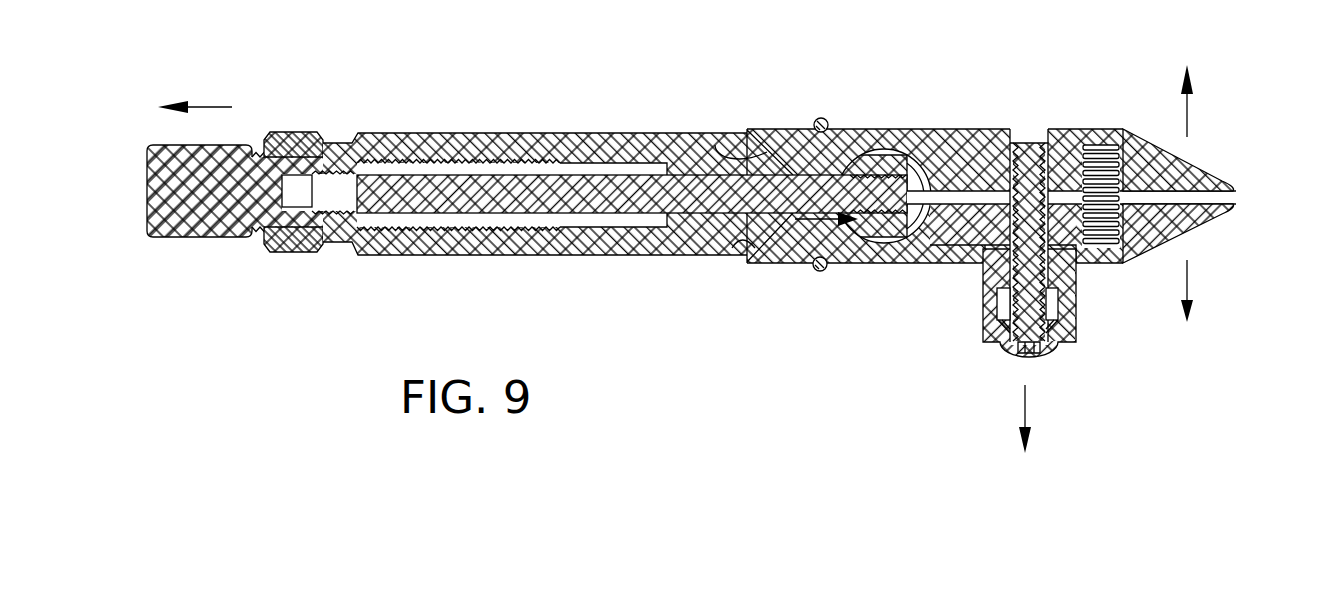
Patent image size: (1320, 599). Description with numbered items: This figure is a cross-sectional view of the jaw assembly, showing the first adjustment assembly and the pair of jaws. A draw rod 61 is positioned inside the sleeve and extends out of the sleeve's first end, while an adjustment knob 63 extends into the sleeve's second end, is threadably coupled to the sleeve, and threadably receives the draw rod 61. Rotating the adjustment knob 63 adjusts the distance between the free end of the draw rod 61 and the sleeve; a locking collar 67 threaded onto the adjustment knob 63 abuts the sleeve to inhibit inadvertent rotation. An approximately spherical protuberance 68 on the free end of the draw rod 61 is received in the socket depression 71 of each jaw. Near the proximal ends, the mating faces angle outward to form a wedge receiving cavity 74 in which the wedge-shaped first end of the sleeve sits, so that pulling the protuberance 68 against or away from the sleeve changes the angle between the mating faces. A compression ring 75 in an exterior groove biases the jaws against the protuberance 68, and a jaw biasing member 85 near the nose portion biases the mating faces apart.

The draw rod 61 is at (496, 175).
The adjustment knob 63 is at (197, 237).
The locking collar 67 is at (288, 132).
The protuberance 68 is at (876, 245).
The socket depression 71 is at (1200, 163).
The wedge receiving cavity 74 is at (715, 145).
The compression ring 75 is at (821, 117).
The jaw biasing member 85 is at (1102, 160).